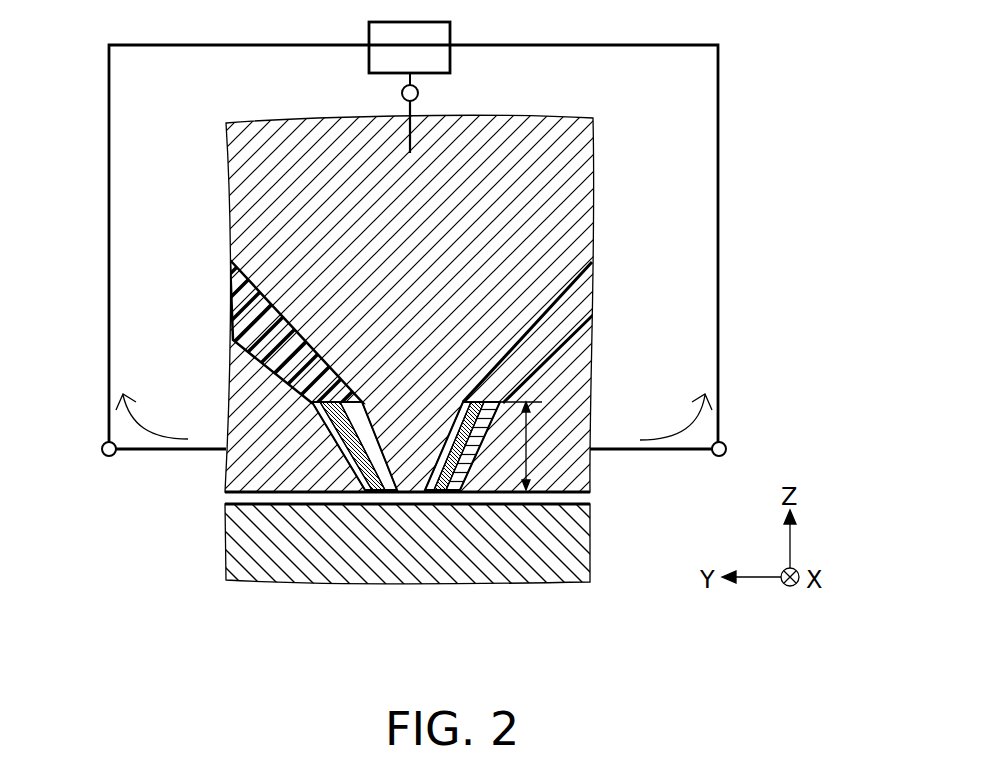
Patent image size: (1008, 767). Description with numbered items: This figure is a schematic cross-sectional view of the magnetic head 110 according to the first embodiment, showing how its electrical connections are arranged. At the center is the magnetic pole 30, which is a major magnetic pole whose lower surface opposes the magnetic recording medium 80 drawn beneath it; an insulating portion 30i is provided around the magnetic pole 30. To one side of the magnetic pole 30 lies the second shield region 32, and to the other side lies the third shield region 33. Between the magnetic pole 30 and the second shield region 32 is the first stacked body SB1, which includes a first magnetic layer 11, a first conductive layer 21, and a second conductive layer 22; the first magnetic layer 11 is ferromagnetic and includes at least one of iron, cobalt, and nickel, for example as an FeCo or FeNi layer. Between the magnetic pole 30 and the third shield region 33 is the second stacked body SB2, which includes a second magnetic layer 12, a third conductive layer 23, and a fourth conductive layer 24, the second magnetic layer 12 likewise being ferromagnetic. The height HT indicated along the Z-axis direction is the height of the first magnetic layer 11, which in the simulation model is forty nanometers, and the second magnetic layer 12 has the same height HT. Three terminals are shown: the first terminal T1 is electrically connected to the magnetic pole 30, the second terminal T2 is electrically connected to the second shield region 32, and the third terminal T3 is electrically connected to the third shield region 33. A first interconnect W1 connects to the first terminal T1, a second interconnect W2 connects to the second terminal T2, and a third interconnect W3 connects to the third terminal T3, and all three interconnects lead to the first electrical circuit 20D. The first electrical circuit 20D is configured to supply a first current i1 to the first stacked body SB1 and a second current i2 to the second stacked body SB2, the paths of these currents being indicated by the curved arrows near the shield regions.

The magnetic head 110 is at (770, 82).
The first electrical circuit 20D is at (450, 35).
The first interconnect W1 is at (416, 112).
The second interconnect W2 is at (718, 88).
The third interconnect W3 is at (109, 78).
The first terminal T1 is at (402, 93).
The second terminal T2 is at (721, 457).
The third terminal T3 is at (109, 457).
The magnetic pole 30 is at (284, 145).
The insulating portion 30i is at (258, 323).
The second shield region 32 is at (562, 473).
The third shield region 33 is at (257, 473).
The magnetic recording medium 80 is at (560, 548).
The first stacked body SB1 is at (488, 545).
The second stacked body SB2 is at (326, 545).
The first magnetic layer 11 is at (442, 490).
The second magnetic layer 12 is at (383, 490).
The first conductive layer 21 is at (427, 490).
The second conductive layer 22 is at (453, 490).
The third conductive layer 23 is at (393, 490).
The fourth conductive layer 24 is at (370, 490).
The first current i1 is at (676, 408).
The second current i2 is at (152, 407).
The height HT is at (528, 445).